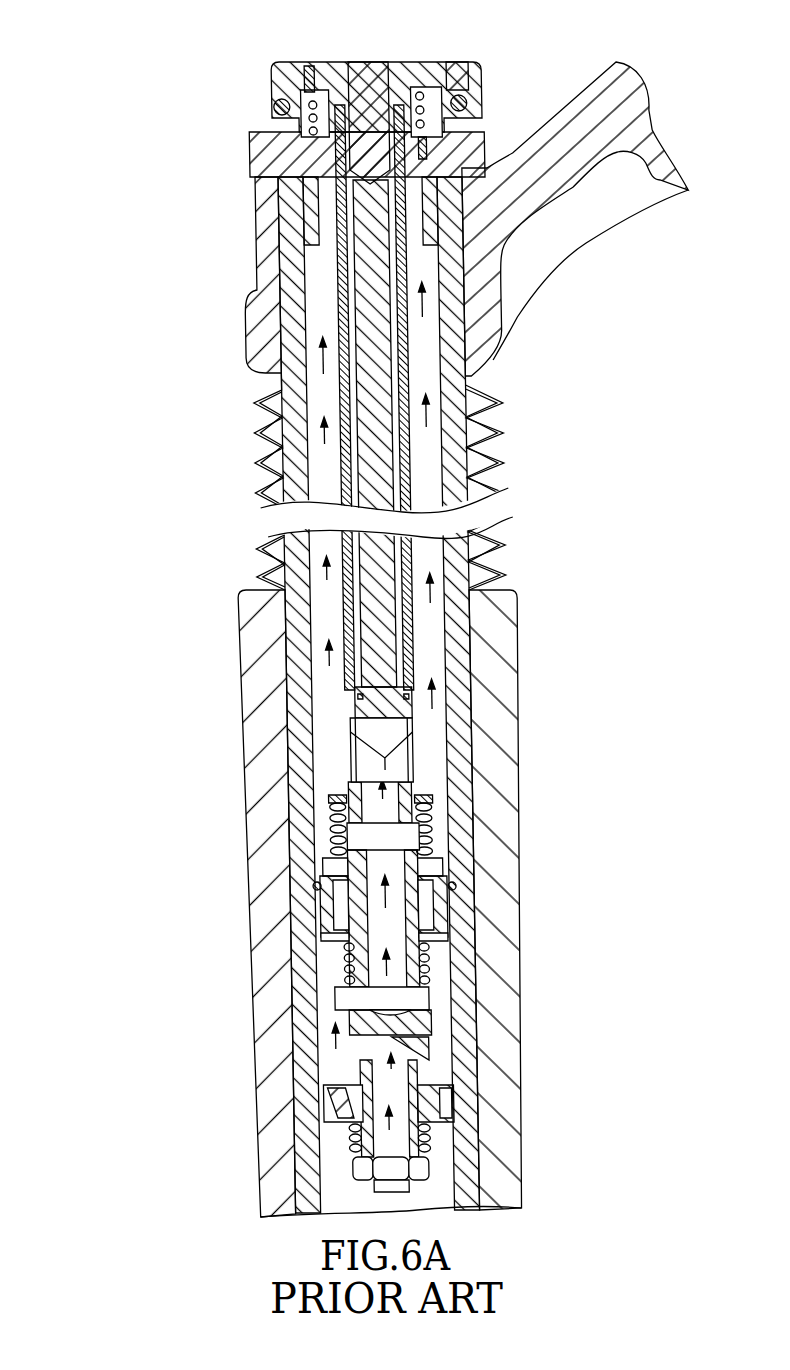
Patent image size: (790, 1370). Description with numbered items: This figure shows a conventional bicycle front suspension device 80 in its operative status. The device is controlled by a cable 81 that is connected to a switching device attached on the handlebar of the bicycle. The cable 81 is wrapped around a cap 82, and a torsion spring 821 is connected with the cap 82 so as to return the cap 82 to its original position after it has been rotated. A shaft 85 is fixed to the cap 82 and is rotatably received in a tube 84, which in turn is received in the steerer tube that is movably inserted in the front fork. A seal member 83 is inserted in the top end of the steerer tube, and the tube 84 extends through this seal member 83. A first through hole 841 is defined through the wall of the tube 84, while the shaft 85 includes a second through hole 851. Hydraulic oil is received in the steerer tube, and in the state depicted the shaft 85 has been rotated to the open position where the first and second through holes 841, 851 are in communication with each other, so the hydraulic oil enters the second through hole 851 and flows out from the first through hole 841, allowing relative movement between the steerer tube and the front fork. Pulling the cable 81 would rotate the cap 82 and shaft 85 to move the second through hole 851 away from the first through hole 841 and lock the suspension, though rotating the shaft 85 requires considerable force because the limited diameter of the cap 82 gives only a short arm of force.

The conventional bicycle front suspension device 80 is at (381, 608).
The cable 81 is at (485, 97).
The cap 82 is at (273, 82).
The torsion spring 821 is at (277, 118).
The seal member 83 is at (317, 202).
The tube 84 is at (340, 303).
The first through hole 841 is at (410, 760).
The shaft 85 is at (373, 462).
The second through hole 851 is at (383, 733).